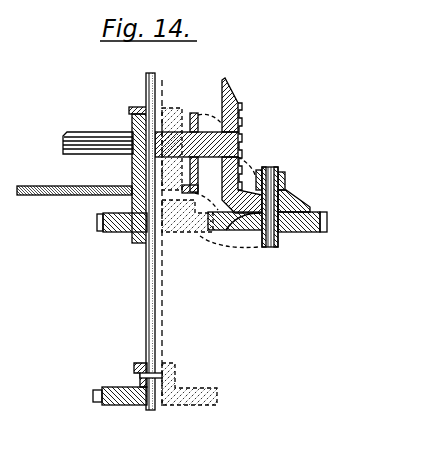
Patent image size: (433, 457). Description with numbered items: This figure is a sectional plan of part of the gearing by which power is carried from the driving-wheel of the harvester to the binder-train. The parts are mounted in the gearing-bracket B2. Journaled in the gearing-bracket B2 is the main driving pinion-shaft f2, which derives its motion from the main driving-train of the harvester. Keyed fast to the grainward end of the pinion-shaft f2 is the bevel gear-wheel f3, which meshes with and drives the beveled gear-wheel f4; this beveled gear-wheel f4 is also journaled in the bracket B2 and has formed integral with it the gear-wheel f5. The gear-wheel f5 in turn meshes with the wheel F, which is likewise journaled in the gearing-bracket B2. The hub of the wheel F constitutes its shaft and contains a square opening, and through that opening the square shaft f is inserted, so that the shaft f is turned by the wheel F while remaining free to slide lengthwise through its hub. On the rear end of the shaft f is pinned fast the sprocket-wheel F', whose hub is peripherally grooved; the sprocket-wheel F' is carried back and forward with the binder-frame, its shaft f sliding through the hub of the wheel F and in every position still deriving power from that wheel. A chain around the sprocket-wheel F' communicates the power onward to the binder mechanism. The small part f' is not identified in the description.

The square shaft f is at (130, 241).
The arm f' is at (140, 365).
The main driving pinion-shaft f2 is at (64, 133).
The bevel gear-wheel f3 is at (233, 93).
The beveled gear-wheel f4 is at (313, 203).
The gear-wheel f5 is at (327, 227).
The wheel F is at (116, 241).
The sprocket-wheel F' is at (103, 384).
The gearing-bracket B2 is at (316, 177).